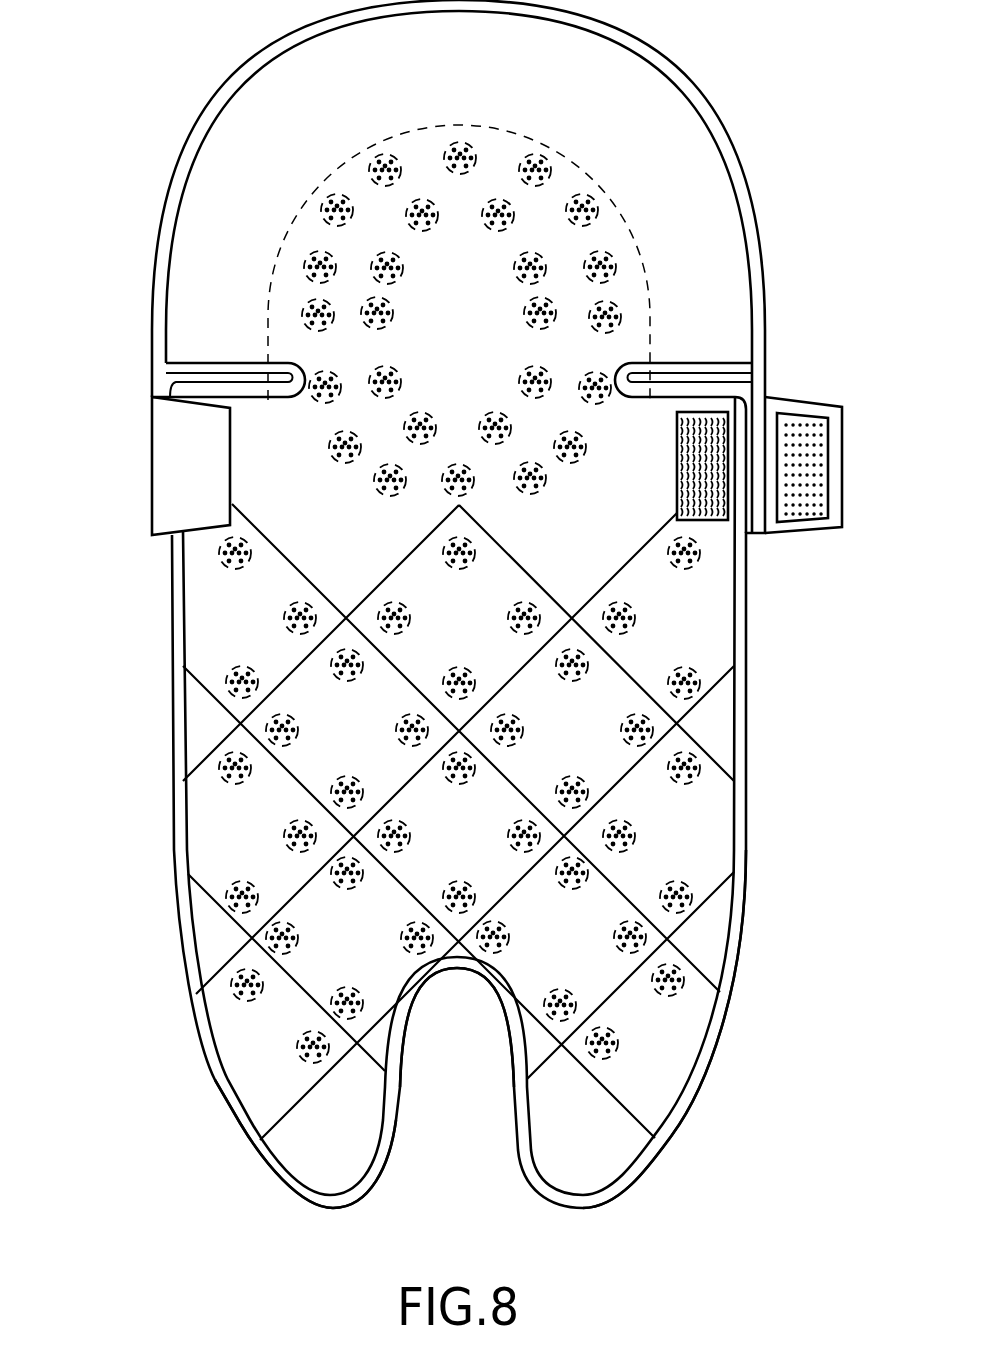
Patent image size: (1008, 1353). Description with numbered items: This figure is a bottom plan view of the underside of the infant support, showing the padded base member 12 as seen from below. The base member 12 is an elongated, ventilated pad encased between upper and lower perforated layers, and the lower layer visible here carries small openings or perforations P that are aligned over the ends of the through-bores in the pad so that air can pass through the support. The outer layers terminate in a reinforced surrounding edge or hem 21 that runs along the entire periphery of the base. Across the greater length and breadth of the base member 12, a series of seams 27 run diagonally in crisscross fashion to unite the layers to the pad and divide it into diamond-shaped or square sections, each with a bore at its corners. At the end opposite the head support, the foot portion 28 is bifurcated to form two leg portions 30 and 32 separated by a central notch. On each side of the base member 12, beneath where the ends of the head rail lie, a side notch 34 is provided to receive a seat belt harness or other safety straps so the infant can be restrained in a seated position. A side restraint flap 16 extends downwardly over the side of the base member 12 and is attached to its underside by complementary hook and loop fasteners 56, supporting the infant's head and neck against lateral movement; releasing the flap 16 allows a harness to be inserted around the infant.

The padded base member 12 is at (180, 733).
The side restraint flap 16 is at (165, 473).
The reinforced surrounding edge or hem 21 is at (742, 960).
The seams 27 is at (305, 997).
The foot portion 28 is at (677, 1138).
The leg portion 30 is at (595, 1158).
The leg portion 32 is at (262, 1113).
The side notch 34 is at (193, 375).
The hook and loop fastener 56 is at (718, 433).
The perforations P is at (233, 681).